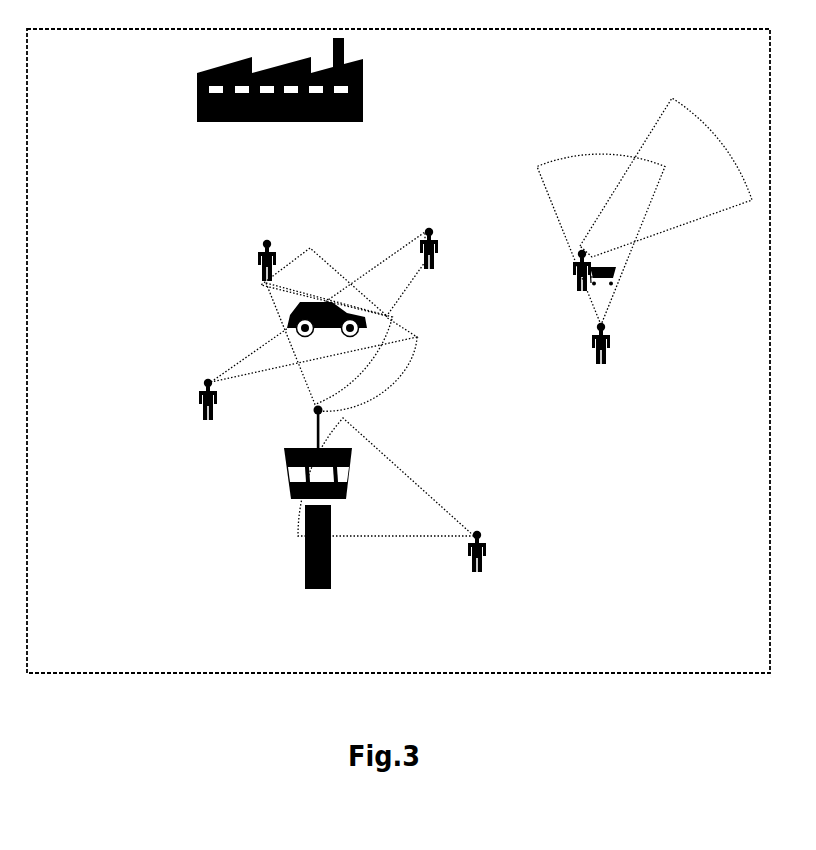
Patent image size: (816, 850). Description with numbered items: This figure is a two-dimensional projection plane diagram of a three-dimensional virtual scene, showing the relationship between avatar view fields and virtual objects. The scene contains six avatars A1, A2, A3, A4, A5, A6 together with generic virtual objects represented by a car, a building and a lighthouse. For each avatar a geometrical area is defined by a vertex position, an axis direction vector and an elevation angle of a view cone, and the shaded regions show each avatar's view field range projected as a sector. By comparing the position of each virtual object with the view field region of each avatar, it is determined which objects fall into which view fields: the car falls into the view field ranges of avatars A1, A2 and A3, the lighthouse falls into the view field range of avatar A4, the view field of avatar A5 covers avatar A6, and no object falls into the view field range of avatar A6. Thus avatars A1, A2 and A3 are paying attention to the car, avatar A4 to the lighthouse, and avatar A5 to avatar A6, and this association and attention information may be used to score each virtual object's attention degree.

The avatar A1 is at (294, 326).
The avatar A2 is at (304, 321).
The avatar A3 is at (433, 238).
The avatar A4 is at (407, 502).
The avatar A5 is at (601, 265).
The avatar A6 is at (648, 194).